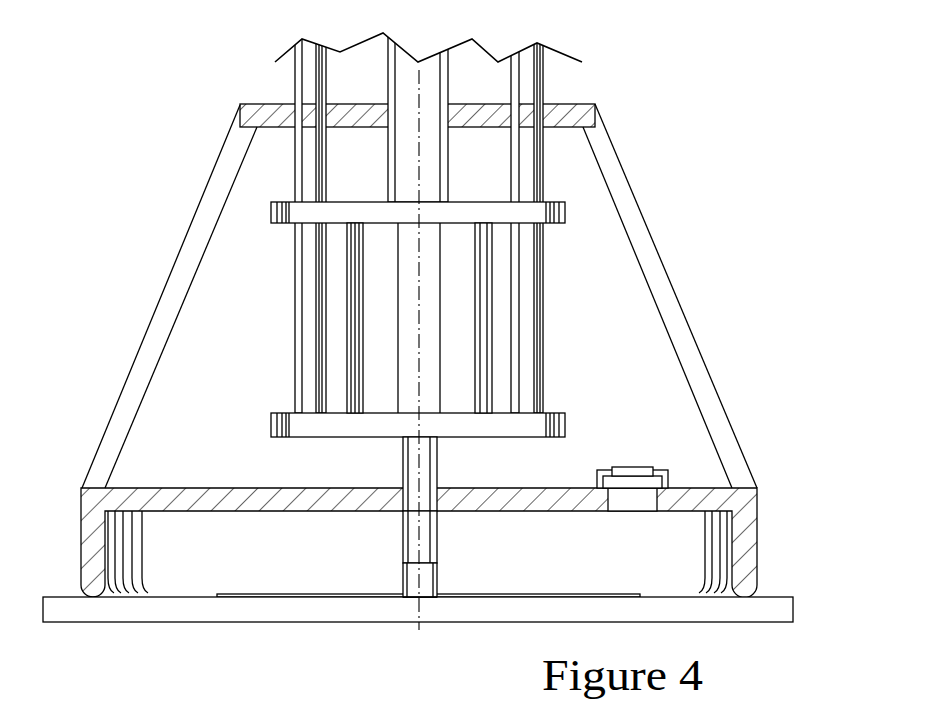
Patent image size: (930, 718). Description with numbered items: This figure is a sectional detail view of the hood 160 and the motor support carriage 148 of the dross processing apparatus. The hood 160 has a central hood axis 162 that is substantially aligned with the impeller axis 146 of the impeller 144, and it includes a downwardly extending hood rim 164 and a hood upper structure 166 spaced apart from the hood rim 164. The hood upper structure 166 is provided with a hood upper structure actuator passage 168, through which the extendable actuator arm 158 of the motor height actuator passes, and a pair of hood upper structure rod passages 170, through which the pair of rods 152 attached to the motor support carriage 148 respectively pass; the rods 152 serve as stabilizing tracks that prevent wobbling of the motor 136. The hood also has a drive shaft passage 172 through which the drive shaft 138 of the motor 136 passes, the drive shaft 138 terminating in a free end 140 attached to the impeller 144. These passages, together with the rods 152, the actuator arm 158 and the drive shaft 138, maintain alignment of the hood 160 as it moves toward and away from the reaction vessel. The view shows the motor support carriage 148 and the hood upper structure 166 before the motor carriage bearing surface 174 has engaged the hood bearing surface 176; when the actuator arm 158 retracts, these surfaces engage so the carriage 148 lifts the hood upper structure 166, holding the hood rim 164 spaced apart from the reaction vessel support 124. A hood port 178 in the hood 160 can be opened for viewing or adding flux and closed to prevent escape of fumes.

The reaction vessel support 124 is at (287, 603).
The motor 136 is at (488, 317).
The drive shaft 138 is at (438, 468).
The free end 140 is at (412, 553).
The impeller 144 is at (438, 575).
The impeller axis 146 is at (418, 593).
The motor support carriage 148 is at (553, 423).
The rods 152 is at (305, 86).
The actuator arm 158 is at (427, 92).
The hood 160 is at (693, 222).
The central hood axis 162 is at (418, 358).
The hood rim 164 is at (743, 538).
The hood upper structure 166 is at (588, 105).
The hood upper structure actuator passage 168 is at (387, 107).
The hood upper structure rod passages 170 is at (575, 128).
The drive shaft passage 172 is at (395, 497).
The motor carriage bearing surface 174 is at (337, 198).
The hood bearing surface 176 is at (337, 128).
The hood port 178 is at (635, 482).